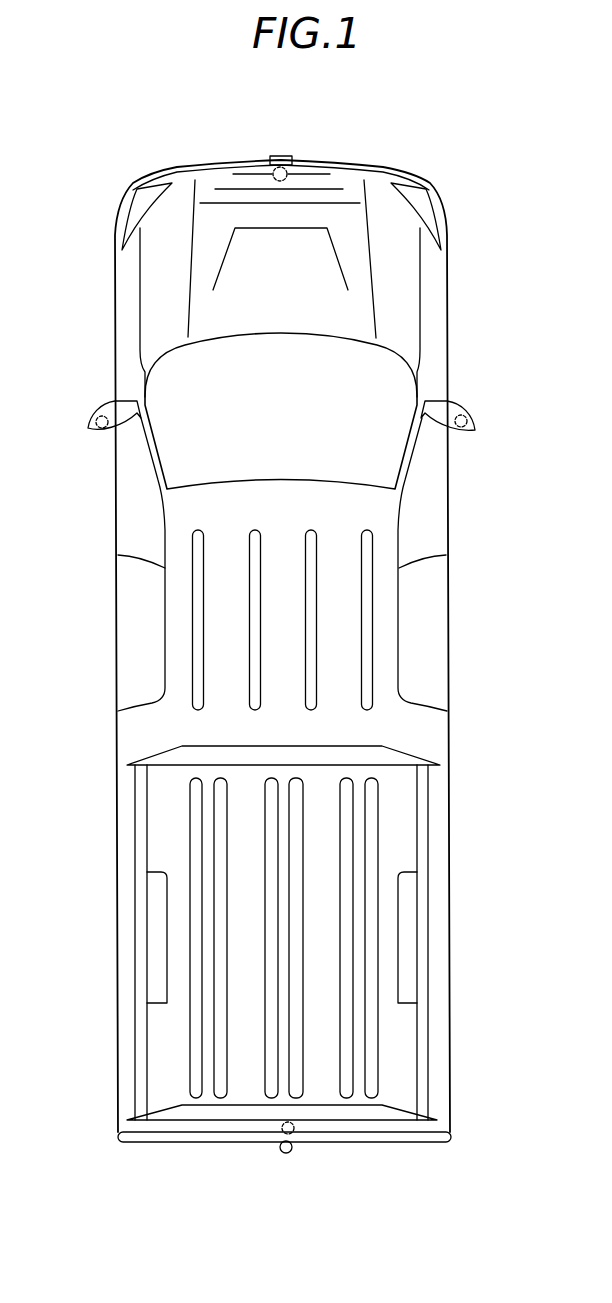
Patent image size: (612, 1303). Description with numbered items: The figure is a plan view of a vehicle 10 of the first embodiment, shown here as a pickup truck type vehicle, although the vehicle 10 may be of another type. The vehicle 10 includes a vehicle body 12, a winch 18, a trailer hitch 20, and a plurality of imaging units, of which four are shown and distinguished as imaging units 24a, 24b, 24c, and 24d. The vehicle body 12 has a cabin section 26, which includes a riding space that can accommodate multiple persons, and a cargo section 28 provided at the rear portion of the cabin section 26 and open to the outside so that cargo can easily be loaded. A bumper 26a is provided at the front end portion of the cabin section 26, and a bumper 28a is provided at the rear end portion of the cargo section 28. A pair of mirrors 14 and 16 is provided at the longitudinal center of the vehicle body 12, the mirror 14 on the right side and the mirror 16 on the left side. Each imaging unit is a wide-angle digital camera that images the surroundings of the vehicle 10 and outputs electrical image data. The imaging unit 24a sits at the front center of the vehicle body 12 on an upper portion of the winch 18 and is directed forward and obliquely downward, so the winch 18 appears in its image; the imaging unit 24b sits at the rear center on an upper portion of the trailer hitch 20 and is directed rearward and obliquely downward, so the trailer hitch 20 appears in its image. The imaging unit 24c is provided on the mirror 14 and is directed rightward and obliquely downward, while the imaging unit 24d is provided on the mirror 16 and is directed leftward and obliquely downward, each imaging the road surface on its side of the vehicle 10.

The vehicle 10 is at (434, 142).
The vehicle body 12 is at (491, 768).
The mirror 14 is at (455, 400).
The mirror 16 is at (108, 400).
The winch 18 is at (282, 156).
The trailer hitch 20 is at (286, 1153).
The imaging unit 24a is at (318, 162).
The imaging unit 24b is at (305, 1134).
The imaging unit 24c is at (460, 432).
The imaging unit 24d is at (103, 432).
The cabin section 26 is at (449, 612).
The bumper 26a is at (174, 181).
The cargo section 28 is at (449, 963).
The bumper 28a is at (160, 1143).